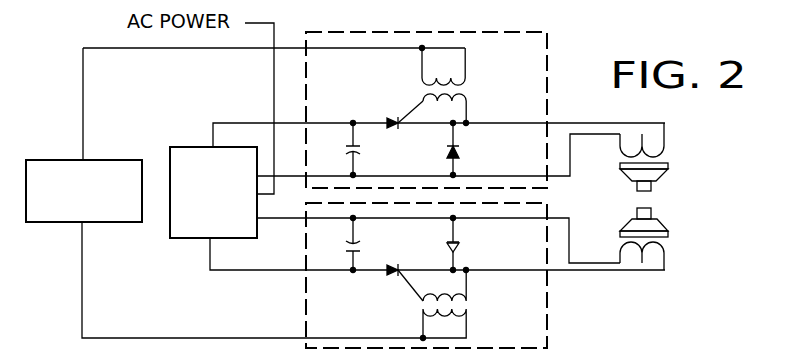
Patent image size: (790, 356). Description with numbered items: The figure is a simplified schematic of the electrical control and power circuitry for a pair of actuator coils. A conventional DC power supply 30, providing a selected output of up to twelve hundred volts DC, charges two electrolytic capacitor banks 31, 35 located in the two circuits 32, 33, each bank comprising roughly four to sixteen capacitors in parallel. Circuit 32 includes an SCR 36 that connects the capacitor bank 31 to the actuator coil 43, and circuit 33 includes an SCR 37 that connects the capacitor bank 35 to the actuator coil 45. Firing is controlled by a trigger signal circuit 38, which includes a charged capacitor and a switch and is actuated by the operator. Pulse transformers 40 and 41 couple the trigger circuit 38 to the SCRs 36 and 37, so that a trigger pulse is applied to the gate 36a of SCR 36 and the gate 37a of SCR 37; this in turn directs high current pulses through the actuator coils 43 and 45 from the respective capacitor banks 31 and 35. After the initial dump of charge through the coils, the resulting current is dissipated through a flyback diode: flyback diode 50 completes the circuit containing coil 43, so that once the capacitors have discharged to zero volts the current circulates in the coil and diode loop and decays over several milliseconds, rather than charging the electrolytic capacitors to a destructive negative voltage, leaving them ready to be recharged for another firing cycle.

The DC power supply 30 is at (183, 146).
The capacitor bank 31 is at (362, 148).
The circuit 32 is at (547, 50).
The circuit 33 is at (547, 317).
The capacitor bank 35 is at (362, 247).
The SCR 36 is at (387, 121).
The gate of SCR 36 36a is at (417, 102).
The SCR 37 is at (387, 277).
The gate of SCR 37 37a is at (410, 290).
The trigger signal circuit 38 is at (112, 159).
The pulse transformer 40 is at (466, 78).
The pulse transformer 41 is at (468, 309).
The actuator coil 43 is at (668, 151).
The actuator coil 45 is at (668, 256).
The flyback diode 50 is at (460, 152).